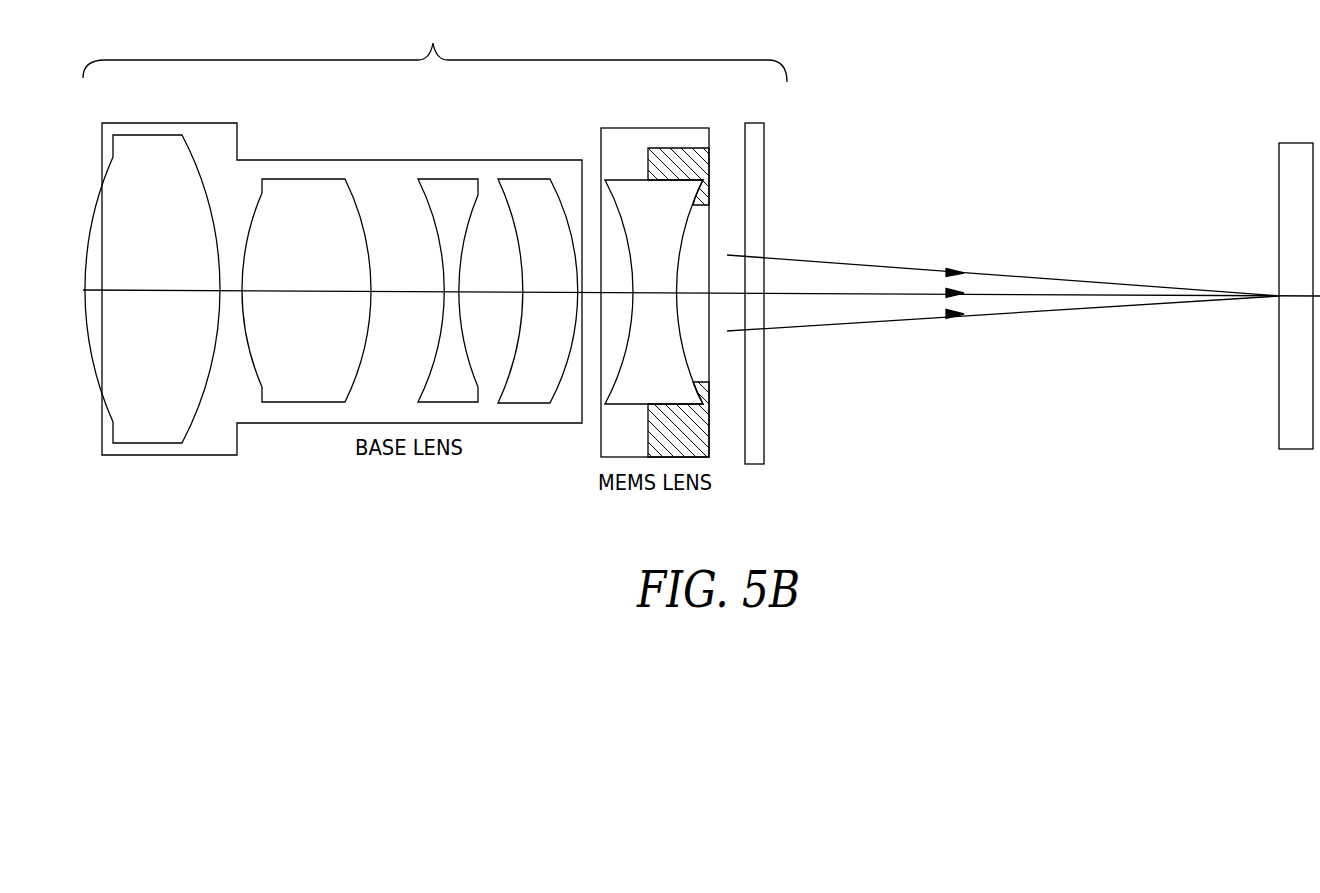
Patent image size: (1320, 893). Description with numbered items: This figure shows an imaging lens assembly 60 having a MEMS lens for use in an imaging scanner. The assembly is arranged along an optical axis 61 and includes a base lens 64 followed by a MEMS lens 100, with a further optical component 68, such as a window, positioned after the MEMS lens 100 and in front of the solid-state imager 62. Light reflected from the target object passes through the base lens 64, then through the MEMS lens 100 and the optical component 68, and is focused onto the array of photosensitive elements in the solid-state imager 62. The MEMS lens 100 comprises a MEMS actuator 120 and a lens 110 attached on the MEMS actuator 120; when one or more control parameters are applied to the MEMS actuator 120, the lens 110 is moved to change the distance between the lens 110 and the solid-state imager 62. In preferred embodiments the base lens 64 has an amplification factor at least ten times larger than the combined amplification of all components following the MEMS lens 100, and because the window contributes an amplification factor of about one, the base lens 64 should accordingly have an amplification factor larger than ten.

The imaging lens assembly 60 is at (433, 43).
The optical axis 61 is at (91, 288).
The solid-state imager 62 is at (1293, 143).
The base lens 64 is at (169, 123).
The optical component 68 is at (757, 123).
The MEMS lens 100 is at (601, 139).
The lens 110 is at (629, 407).
The MEMS actuator 120 is at (681, 148).